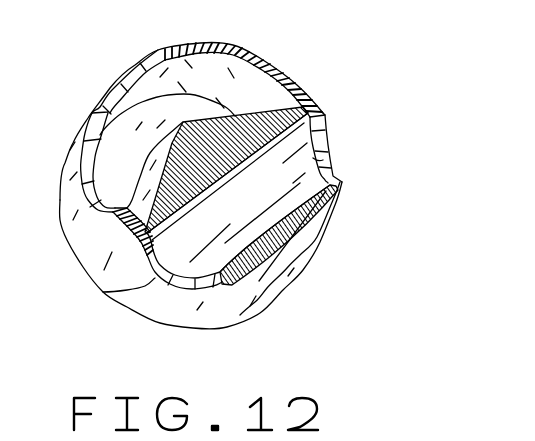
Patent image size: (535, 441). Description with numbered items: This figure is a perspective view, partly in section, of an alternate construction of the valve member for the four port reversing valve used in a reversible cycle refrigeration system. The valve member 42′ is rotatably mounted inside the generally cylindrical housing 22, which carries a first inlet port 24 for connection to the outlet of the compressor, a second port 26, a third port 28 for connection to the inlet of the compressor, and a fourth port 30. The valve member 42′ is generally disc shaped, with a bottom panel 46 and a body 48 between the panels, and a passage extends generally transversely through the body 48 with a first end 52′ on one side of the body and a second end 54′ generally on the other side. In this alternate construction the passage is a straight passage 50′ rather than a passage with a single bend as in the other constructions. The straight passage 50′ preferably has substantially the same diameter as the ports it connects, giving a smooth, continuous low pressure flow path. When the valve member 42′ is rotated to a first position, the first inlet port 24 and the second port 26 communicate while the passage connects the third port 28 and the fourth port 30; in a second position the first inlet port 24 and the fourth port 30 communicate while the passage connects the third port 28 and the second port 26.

The housing 22 is at (242, 314).
The first inlet port 24 is at (75, 158).
The second port 26 is at (123, 84).
The third port 28 is at (323, 132).
The fourth port 30 is at (214, 286).
The valve member 42′ is at (260, 93).
The bottom panel 46 is at (112, 174).
The body 48 is at (226, 112).
The straight passage 50′ is at (263, 193).
The first end 52′ is at (314, 167).
The second end 54′ is at (103, 292).